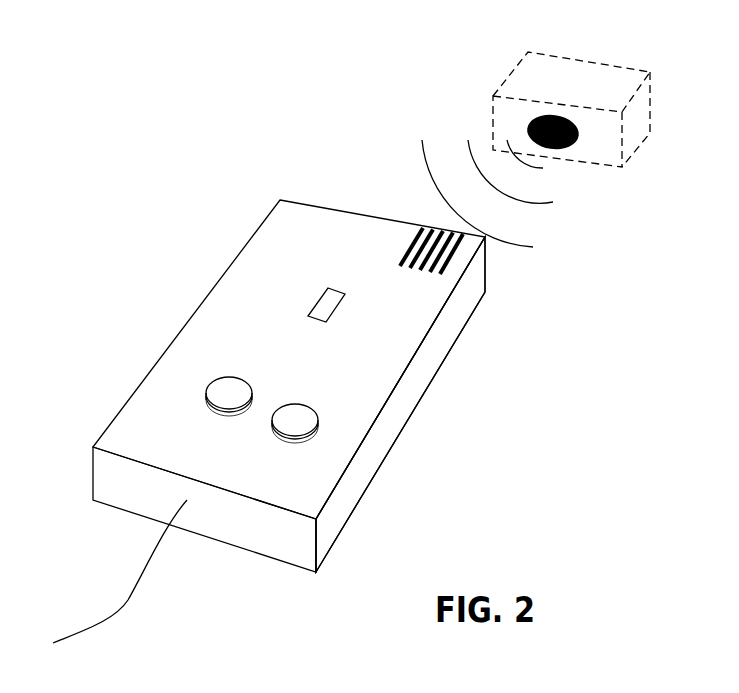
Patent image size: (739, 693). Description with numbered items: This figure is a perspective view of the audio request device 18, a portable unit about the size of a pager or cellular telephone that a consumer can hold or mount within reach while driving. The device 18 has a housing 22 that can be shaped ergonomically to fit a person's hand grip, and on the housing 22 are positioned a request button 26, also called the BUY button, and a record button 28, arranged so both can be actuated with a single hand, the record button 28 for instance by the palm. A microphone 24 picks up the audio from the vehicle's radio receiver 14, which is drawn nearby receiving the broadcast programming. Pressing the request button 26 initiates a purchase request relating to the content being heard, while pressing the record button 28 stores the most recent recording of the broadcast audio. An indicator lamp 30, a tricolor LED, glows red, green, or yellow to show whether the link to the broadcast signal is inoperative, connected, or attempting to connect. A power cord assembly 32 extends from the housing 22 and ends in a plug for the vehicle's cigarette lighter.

The radio receiver 14 is at (598, 63).
The device 18 is at (243, 240).
The housing 22 is at (432, 380).
The microphone 24 is at (413, 242).
The request button 26 is at (225, 378).
The record button 28 is at (318, 430).
The indicator lamp 30 is at (318, 302).
The power cord assembly 32 is at (140, 588).